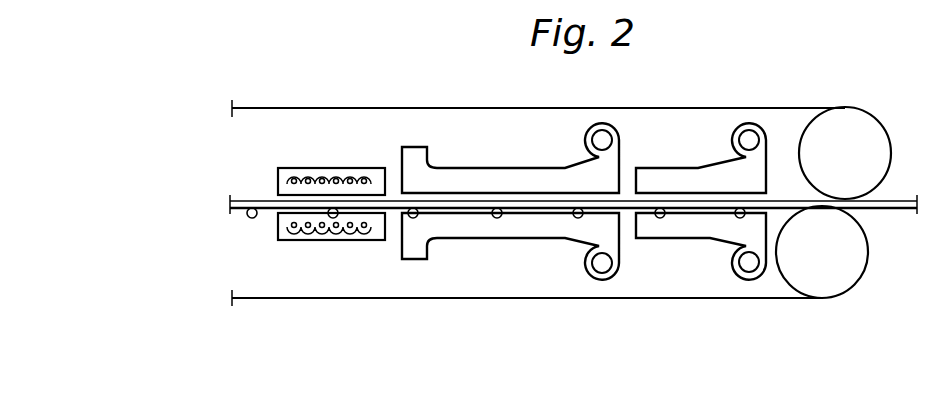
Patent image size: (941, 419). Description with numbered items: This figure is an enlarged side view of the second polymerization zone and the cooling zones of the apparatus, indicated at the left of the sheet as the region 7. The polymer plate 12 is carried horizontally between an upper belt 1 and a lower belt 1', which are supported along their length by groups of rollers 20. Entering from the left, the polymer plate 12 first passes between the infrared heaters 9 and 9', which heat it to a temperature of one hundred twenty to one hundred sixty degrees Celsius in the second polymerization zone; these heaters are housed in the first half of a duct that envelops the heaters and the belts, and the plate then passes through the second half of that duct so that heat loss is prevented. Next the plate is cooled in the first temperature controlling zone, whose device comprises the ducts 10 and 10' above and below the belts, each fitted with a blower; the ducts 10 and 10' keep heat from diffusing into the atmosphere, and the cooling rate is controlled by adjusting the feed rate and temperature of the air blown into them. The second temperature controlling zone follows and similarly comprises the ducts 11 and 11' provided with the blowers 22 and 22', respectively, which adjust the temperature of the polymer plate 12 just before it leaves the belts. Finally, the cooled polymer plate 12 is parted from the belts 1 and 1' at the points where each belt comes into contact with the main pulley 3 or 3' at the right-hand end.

The belt 1 is at (538, 89).
The belt 1' is at (527, 317).
The main pulley 3 is at (845, 132).
The main pulley 3' is at (822, 273).
The processing zone 7 is at (150, 6).
The infrared heater 9 is at (331, 130).
The infrared heater 9' is at (331, 277).
The duct 10 is at (510, 129).
The duct 10' is at (510, 277).
The duct 11 is at (701, 129).
The duct 11' is at (701, 277).
The polymer plate 12 is at (908, 198).
The rollers 20 is at (577, 219).
The blower 22 is at (756, 108).
The blower 22' is at (740, 296).